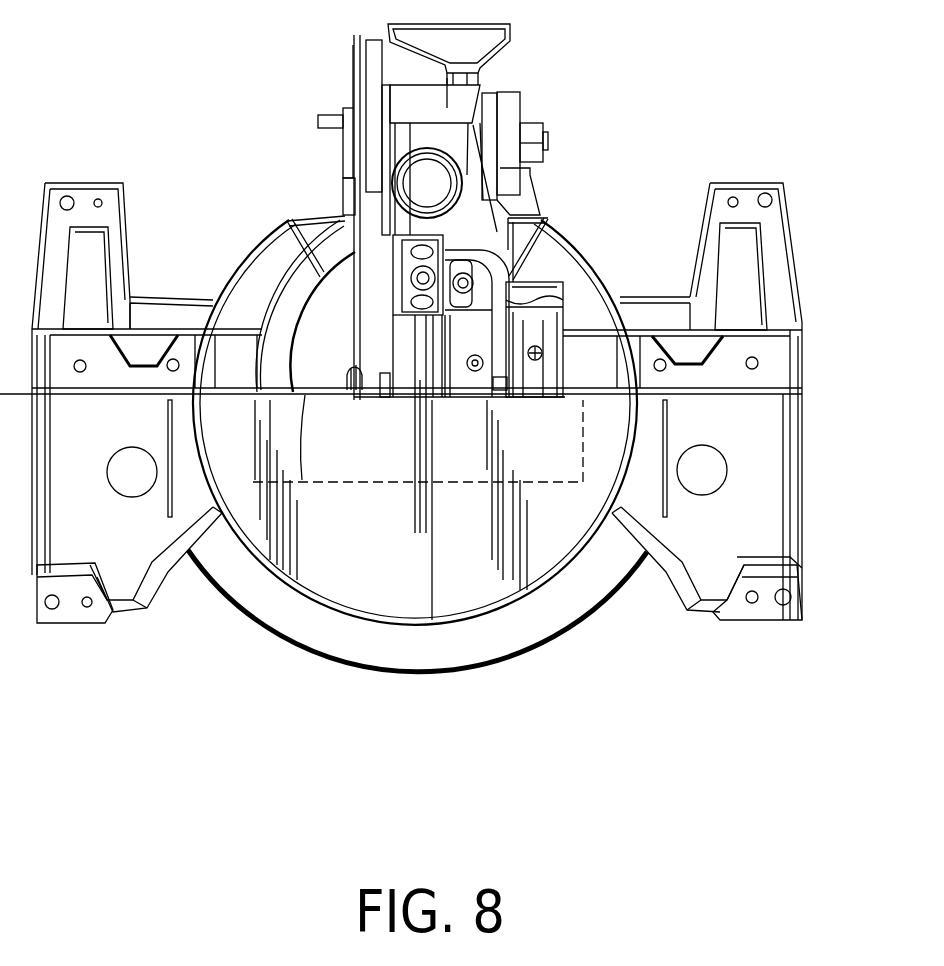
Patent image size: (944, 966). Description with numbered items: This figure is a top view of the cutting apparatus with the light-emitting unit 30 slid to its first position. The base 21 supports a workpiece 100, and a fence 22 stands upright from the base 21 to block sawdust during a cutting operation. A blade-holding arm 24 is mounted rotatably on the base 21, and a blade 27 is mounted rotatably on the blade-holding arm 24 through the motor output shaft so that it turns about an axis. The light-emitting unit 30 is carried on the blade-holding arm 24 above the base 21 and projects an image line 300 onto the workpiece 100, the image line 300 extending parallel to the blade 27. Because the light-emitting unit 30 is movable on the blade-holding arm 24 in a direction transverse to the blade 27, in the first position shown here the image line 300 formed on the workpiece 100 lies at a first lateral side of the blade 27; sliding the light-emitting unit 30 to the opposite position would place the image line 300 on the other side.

The fence 22 is at (762, 385).
The base 21 is at (537, 558).
The blade-holding arm 24 is at (450, 135).
The blade 27 is at (410, 452).
The light-emitting unit 30 is at (384, 263).
The workpiece 100 is at (560, 487).
The image line 300 is at (428, 577).